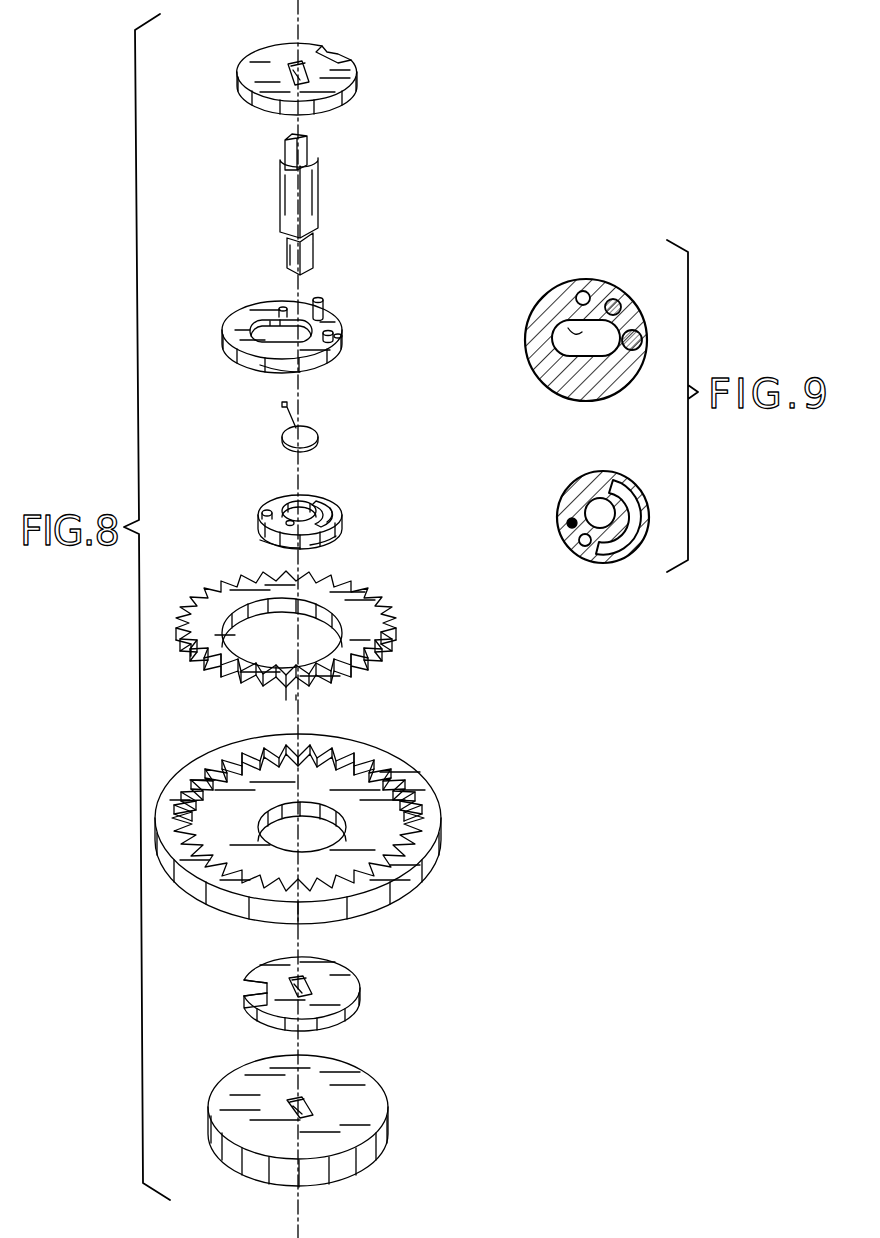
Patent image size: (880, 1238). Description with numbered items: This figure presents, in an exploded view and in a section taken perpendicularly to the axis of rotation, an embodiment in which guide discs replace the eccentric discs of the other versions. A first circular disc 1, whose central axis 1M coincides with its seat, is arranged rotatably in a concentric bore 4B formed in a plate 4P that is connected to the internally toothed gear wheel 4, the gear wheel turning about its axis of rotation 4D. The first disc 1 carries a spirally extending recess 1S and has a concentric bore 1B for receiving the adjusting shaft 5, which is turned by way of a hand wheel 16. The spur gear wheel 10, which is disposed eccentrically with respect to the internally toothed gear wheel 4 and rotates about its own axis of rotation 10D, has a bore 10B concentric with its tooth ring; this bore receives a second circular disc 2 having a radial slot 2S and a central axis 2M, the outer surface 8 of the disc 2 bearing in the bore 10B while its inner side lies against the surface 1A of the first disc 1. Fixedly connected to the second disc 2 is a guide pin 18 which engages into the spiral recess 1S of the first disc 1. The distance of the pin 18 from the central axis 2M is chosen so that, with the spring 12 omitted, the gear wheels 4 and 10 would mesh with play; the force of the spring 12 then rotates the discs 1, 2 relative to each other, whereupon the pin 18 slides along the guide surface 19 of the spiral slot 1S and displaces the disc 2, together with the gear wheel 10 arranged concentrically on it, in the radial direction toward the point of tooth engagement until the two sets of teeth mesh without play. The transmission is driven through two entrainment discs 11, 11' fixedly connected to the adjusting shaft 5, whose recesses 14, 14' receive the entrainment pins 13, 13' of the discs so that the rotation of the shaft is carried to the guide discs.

In FIG. 8, the first circular disc 1 is at (316, 490).
In FIG. 9, the first circular disc 1 is at (592, 478).
In FIG. 8, the surface 1A is at (326, 546).
In FIG. 8, the concentric bore 1B is at (292, 503).
In FIG. 9, the concentric bore 1B is at (595, 512).
In FIG. 8, the central axis 1M is at (285, 552).
In FIG. 8, the spirally extending recess 1S is at (334, 502).
In FIG. 9, the spirally extending recess 1S is at (626, 503).
In FIG. 8, the second circular disc 2 is at (250, 358).
In FIG. 9, the second circular disc 2 is at (545, 362).
In FIG. 8, the central axis 2M is at (283, 300).
In FIG. 8, the radial slot 2S is at (268, 325).
In FIG. 9, the radial slot 2S is at (553, 320).
In FIG. 8, the internally toothed gear wheel 4 is at (398, 752).
In FIG. 8, the concentric bore 4B is at (330, 835).
In FIG. 8, the axis of rotation 4D is at (290, 810).
In FIG. 8, the plate 4P is at (440, 828).
In FIG. 8, the adjusting shaft 5 is at (312, 197).
In FIG. 8, the outer surface 8 is at (265, 375).
In FIG. 8, the spur gear wheel 10 is at (392, 648).
In FIG. 8, the bore 10B is at (338, 637).
In FIG. 8, the axis of rotation 10D is at (285, 714).
In FIG. 8, the entrainment disc 11 is at (272, 79).
In FIG. 8, the entrainment disc 11' is at (342, 994).
In FIG. 8, the spring 12 is at (282, 433).
In FIG. 8, the entrainment pin 13 is at (348, 290).
In FIG. 9, the entrainment pin 13 is at (633, 285).
In FIG. 8, the entrainment pin 13' is at (232, 529).
In FIG. 9, the entrainment pin 13' is at (533, 546).
In FIG. 8, the recess 14 is at (370, 51).
In FIG. 8, the recess 14' is at (226, 995).
In FIG. 8, the hand wheel 16 is at (228, 1095).
In FIG. 8, the guide pin 18 is at (338, 356).
In FIG. 9, the guide pin 18 is at (641, 345).
In FIG. 8, the guide surface 19 is at (340, 524).